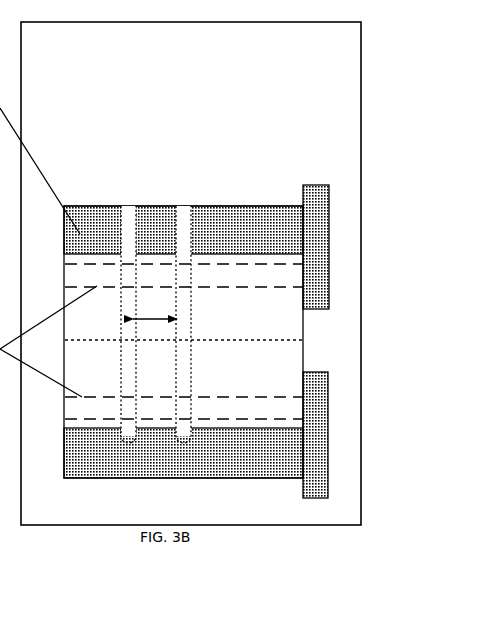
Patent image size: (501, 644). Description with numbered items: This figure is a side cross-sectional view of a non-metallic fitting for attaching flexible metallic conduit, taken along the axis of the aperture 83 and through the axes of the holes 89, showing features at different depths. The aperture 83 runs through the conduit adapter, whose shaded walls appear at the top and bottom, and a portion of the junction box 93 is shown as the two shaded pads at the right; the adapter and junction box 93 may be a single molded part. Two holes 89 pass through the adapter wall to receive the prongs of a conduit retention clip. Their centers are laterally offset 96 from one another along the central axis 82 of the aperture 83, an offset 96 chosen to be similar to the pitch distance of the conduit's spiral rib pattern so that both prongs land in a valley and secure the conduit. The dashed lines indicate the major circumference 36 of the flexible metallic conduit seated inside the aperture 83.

The major circumference 36 is at (82, 420).
The central axis 82 is at (258, 342).
The aperture 83 is at (183, 329).
The two holes 89 is at (156, 244).
The junction box 93 is at (386, 341).
The offset 96 is at (155, 308).